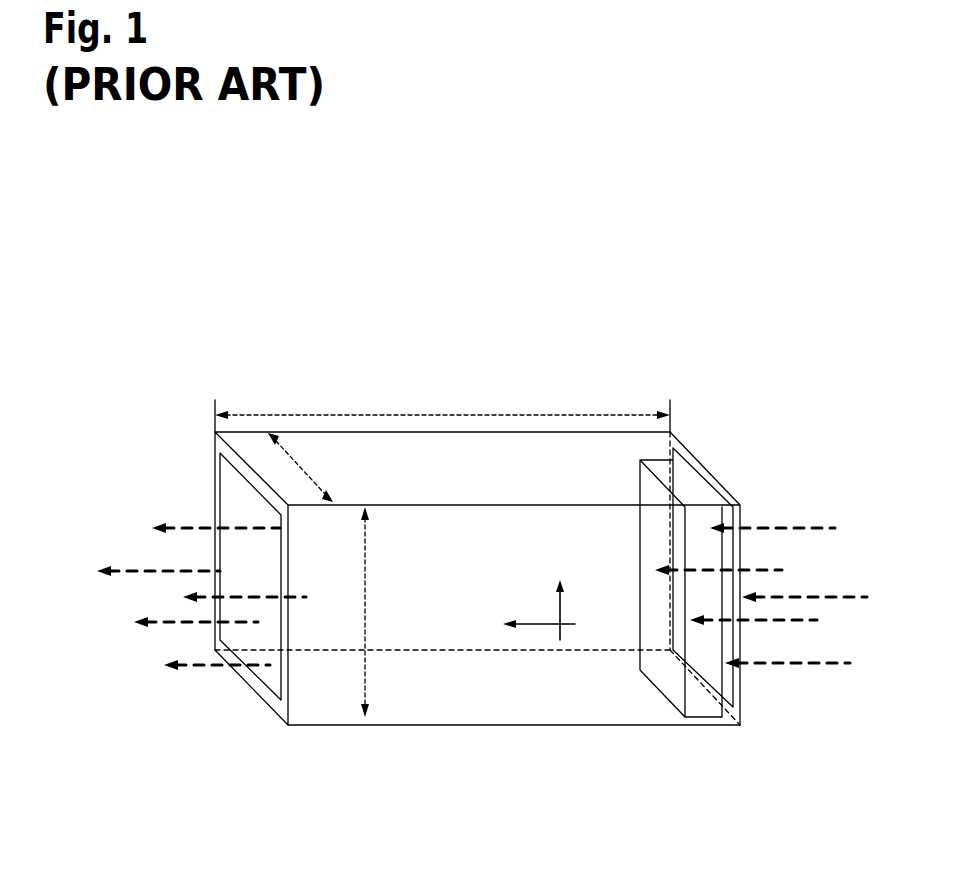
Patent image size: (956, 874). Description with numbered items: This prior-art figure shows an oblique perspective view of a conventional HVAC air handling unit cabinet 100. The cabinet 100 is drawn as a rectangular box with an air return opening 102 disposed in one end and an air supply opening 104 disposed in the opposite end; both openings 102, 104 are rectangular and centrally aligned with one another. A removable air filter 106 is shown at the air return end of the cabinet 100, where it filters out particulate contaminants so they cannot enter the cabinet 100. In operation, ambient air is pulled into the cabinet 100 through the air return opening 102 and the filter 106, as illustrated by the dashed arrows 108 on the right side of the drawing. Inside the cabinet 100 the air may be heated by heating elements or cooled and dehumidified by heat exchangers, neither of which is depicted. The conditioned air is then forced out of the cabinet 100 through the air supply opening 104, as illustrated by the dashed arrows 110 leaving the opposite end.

The HVAC AHU cabinet 100 is at (143, 318).
The air return opening 102 is at (725, 683).
The air supply opening 104 is at (228, 487).
The removable air filter 106 is at (690, 483).
The dashed arrows 108 is at (808, 528).
The dashed arrows 110 is at (162, 569).